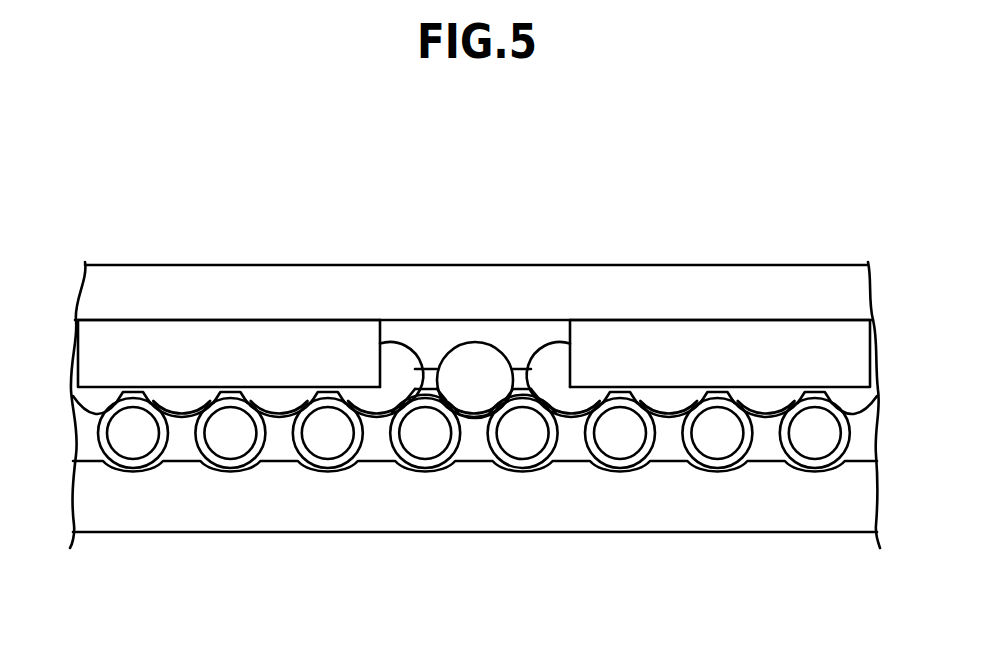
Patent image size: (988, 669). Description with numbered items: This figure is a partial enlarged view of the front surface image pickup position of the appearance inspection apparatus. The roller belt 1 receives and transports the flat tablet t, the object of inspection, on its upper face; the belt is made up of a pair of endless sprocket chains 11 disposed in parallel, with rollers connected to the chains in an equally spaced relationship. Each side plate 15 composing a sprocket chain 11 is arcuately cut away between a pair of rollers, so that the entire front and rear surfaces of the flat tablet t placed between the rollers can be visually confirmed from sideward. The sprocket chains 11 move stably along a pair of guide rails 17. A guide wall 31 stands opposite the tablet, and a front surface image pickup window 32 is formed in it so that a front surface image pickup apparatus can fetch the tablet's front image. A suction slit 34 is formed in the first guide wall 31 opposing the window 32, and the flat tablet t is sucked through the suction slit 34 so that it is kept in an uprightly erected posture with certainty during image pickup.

The roller belt 1 is at (475, 452).
The endless sprocket chain 11 is at (202, 482).
The side plate 15 is at (382, 443).
The guide rail 17 is at (595, 500).
The guide wall 31 is at (405, 330).
The front surface image pickup window 32 is at (570, 330).
The suction slit 34 is at (475, 301).
The flat tablet t is at (467, 343).